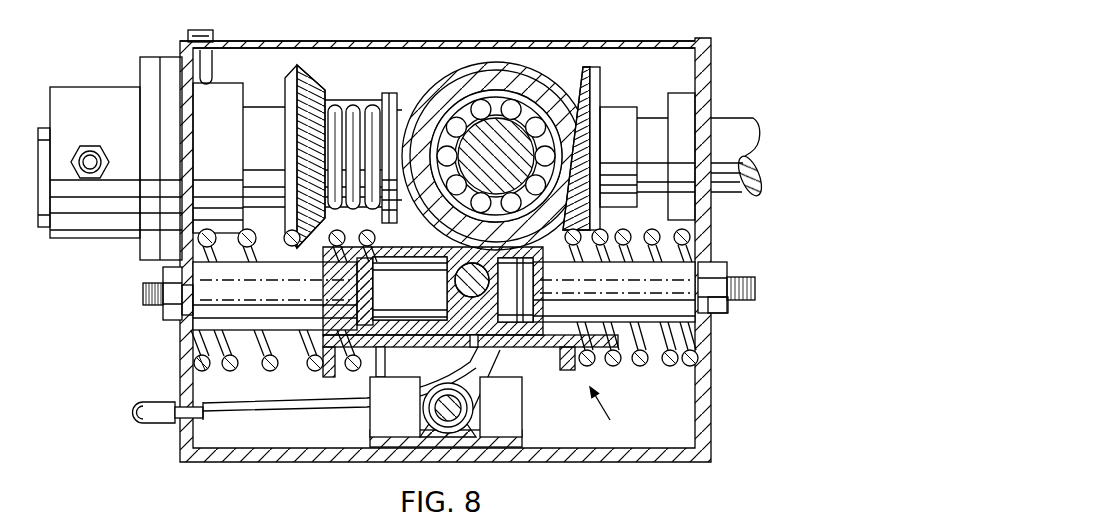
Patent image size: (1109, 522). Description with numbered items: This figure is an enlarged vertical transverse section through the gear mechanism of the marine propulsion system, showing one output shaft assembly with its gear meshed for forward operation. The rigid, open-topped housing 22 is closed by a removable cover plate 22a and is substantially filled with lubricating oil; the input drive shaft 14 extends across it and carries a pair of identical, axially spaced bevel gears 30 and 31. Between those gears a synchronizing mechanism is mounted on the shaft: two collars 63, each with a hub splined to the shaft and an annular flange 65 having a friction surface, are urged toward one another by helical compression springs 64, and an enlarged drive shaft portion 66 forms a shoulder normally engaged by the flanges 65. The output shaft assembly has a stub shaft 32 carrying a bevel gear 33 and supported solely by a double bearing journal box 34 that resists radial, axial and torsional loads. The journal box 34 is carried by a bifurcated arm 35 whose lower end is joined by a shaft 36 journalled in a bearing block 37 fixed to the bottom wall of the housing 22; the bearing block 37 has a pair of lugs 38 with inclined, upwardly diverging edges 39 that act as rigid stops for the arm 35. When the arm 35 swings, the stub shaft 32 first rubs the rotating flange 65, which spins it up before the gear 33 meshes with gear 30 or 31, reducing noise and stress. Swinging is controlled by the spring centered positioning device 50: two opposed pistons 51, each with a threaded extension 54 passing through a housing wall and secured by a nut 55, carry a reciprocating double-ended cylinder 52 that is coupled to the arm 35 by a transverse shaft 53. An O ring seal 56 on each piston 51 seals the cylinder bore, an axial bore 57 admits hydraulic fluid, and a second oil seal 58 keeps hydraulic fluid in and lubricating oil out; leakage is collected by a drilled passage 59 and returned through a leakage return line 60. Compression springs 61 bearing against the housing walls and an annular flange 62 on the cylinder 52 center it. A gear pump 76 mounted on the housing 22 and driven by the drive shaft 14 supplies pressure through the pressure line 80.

The drive shaft 14 is at (723, 118).
The housing 22 is at (707, 84).
The cover plate 22a is at (653, 42).
The bevel gear 30 is at (592, 73).
The bevel gear 31 is at (287, 80).
The stub shaft 32 is at (473, 135).
The bevel gear 33 is at (548, 102).
The double bearing journal box 34 is at (507, 77).
The bifurcated arm 35 is at (500, 358).
The shaft 36 is at (472, 403).
The bearing block 37 is at (522, 443).
The lug 38 is at (383, 418).
The inclined edge 39 is at (413, 380).
The positioning device 50 is at (616, 412).
The piston 51 is at (213, 310).
The cylinder 52 is at (338, 350).
The shaft 53 is at (452, 286).
The threaded extension 54 is at (142, 283).
The nut 55 is at (165, 315).
The O ring seal 56 is at (360, 262).
The bore 57 is at (247, 283).
The oil seal 58 is at (610, 258).
The drilled passage 59 is at (390, 345).
The leakage return line 60 is at (285, 400).
The compression spring 61 is at (263, 367).
The annular flange 62 is at (562, 355).
The collar 63 is at (358, 110).
The compression spring 64 is at (333, 100).
The annular flange 65 is at (382, 93).
The enlarged drive shaft portion 66 is at (403, 108).
The gear pump 76 is at (105, 87).
The pressure line 80 is at (92, 143).